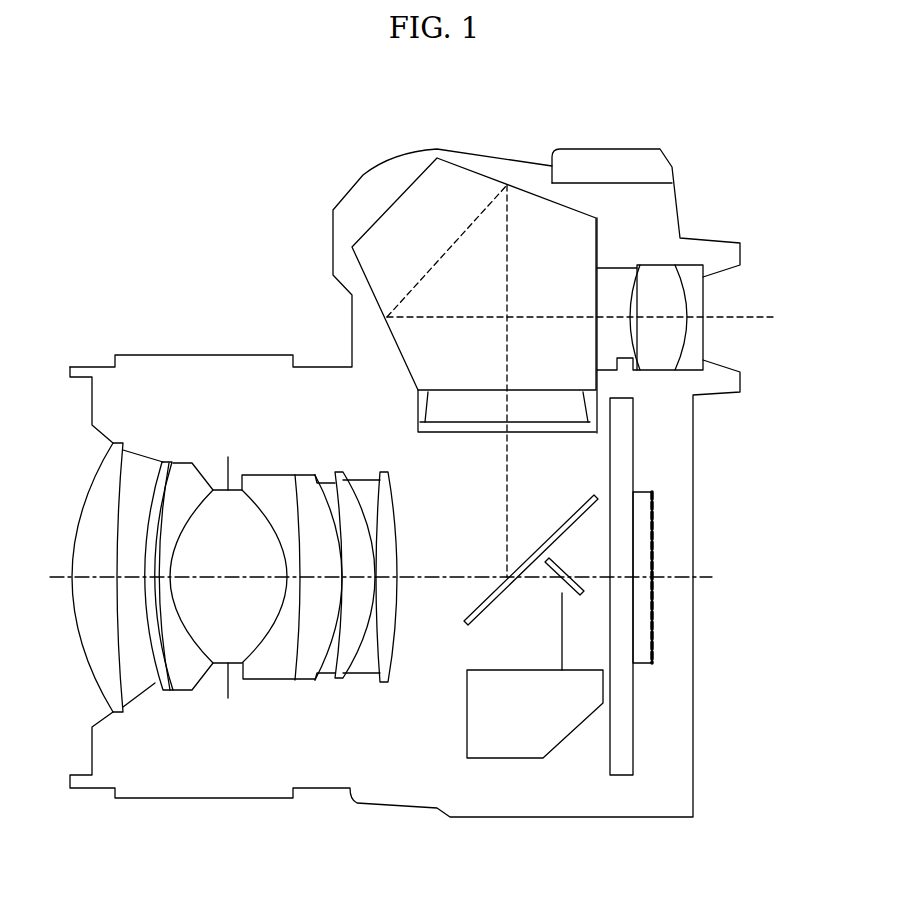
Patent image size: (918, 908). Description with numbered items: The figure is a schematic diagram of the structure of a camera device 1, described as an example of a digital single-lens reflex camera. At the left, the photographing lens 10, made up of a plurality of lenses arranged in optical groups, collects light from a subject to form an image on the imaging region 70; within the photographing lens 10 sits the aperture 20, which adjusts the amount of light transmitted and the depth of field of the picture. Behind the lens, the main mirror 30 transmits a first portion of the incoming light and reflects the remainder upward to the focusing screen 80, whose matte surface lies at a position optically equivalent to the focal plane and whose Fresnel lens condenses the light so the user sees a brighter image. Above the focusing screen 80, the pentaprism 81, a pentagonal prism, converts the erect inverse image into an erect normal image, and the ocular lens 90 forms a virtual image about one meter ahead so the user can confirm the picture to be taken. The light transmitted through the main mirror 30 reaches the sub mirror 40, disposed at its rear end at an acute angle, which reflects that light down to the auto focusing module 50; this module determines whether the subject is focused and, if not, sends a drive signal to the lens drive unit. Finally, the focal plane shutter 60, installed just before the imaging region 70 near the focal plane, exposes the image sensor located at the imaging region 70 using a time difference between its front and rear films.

The camera device 1 is at (254, 120).
The photographing lens 10 is at (137, 343).
The aperture 20 is at (228, 458).
The main mirror 30 is at (580, 493).
The sub mirror 40 is at (563, 567).
The auto focusing (AF) module 50 is at (523, 758).
The focal plane shutter 60 is at (633, 717).
The imaging region 70 is at (653, 593).
The focusing screen 80 is at (565, 437).
The pentaprism 81 is at (468, 168).
The ocular lens 90 is at (721, 296).